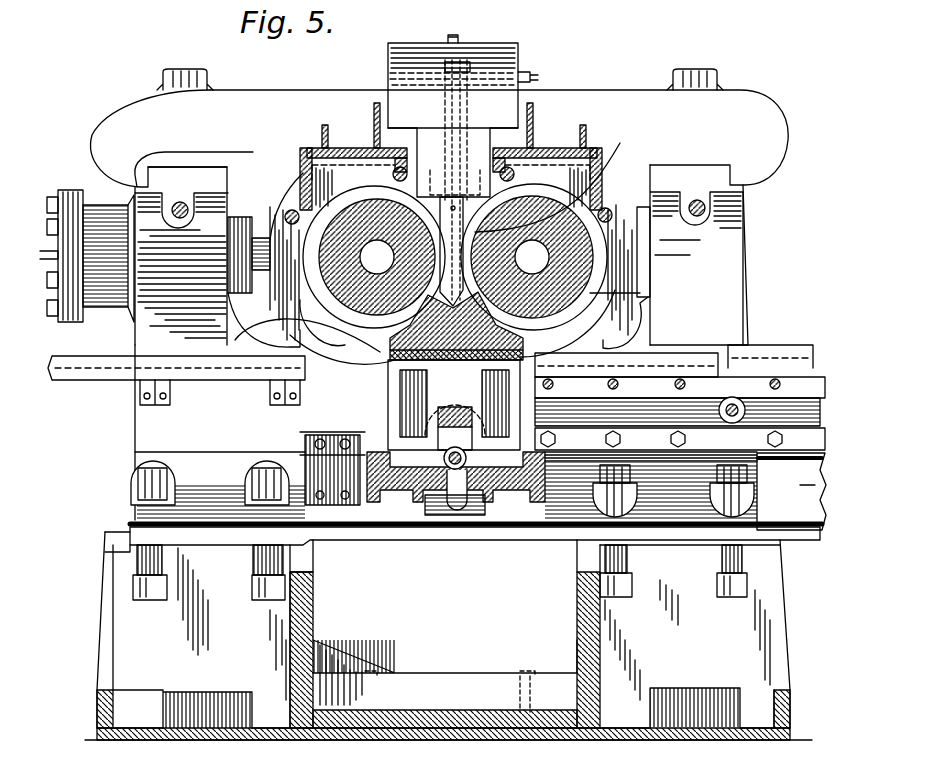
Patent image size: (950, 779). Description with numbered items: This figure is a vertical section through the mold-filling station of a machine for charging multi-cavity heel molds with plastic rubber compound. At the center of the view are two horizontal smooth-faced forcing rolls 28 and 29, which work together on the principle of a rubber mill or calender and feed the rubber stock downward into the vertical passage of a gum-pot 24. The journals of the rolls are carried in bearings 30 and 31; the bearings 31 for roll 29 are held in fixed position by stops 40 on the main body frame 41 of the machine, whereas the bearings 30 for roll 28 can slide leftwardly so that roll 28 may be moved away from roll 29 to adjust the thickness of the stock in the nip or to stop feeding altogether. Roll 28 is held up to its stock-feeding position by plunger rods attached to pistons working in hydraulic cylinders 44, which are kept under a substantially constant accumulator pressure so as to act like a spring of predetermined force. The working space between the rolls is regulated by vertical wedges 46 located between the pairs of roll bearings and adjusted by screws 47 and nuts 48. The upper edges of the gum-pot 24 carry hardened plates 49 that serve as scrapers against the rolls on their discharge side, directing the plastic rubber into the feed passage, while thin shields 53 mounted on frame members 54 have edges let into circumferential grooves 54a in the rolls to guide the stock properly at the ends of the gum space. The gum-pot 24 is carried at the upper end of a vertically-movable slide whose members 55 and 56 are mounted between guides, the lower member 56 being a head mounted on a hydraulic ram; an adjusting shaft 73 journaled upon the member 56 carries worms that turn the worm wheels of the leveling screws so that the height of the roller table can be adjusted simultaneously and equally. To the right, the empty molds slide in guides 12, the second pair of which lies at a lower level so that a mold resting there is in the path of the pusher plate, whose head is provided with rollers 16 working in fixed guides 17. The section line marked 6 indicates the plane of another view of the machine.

The section line 6- 6 is at (320, 443).
The guides 12 is at (695, 355).
The rollers 16 is at (732, 397).
The fixed guides 17 is at (757, 377).
The gum-pot 24 is at (412, 362).
The forcing roll 28 is at (312, 236).
The forcing roll 29 is at (608, 291).
The bearings 30 is at (292, 310).
The bearings 31 is at (620, 273).
The stops 40 is at (651, 243).
The main body frame 41 is at (730, 252).
The hydraulic cylinders 44 is at (108, 298).
The vertical wedges 46 is at (530, 170).
The screws 47 is at (459, 36).
The nuts 48 is at (480, 58).
The hardened plates 49 is at (605, 326).
The thin shields 53 is at (490, 232).
The frame members 54 is at (410, 43).
The circumferential grooves 54a is at (668, 146).
The slide 55 is at (395, 410).
The slide member 56 is at (360, 478).
The adjusting shaft 73 is at (452, 472).